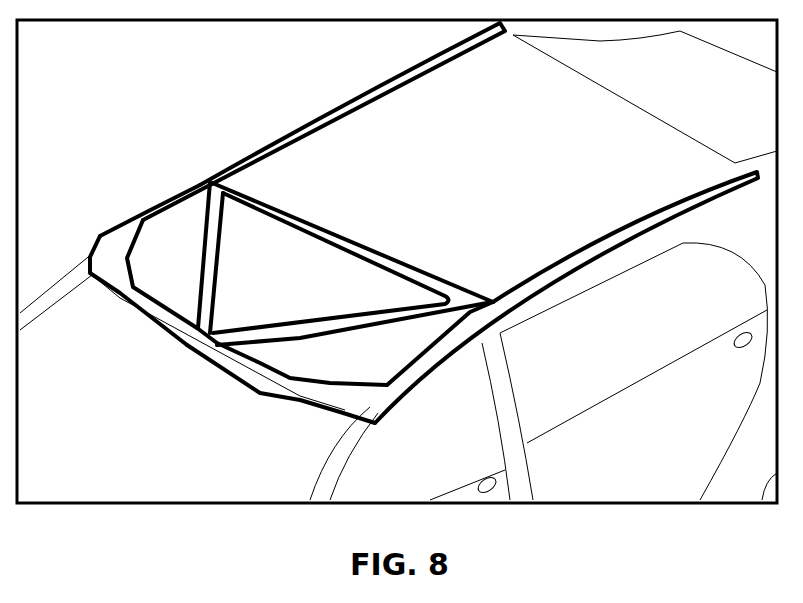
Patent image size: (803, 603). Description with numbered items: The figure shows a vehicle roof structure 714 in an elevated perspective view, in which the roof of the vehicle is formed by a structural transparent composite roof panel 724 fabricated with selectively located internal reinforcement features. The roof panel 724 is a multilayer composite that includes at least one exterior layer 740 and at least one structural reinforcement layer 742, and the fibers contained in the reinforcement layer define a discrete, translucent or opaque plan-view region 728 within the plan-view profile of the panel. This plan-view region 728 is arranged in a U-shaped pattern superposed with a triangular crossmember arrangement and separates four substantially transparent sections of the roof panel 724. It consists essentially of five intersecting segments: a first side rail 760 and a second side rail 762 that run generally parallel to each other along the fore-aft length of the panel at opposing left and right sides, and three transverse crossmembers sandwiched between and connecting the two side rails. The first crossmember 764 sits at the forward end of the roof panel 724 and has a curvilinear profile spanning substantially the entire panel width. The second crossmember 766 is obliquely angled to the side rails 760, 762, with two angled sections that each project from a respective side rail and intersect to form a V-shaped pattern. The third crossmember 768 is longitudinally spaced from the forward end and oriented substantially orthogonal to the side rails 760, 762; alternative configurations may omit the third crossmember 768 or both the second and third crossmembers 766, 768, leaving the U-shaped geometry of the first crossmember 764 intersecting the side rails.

The vehicle roof structure 714 is at (167, 116).
The plan-view region 728 is at (280, 118).
The second side rail 762 is at (357, 97).
The structural reinforcement layer 742 is at (163, 207).
The exterior layer 740 is at (160, 257).
The second crossmember 766 is at (207, 273).
The third crossmember 768 is at (258, 198).
The composite roof panel 724 is at (198, 353).
The first crossmember 764 is at (290, 390).
The first side rail 760 is at (612, 248).